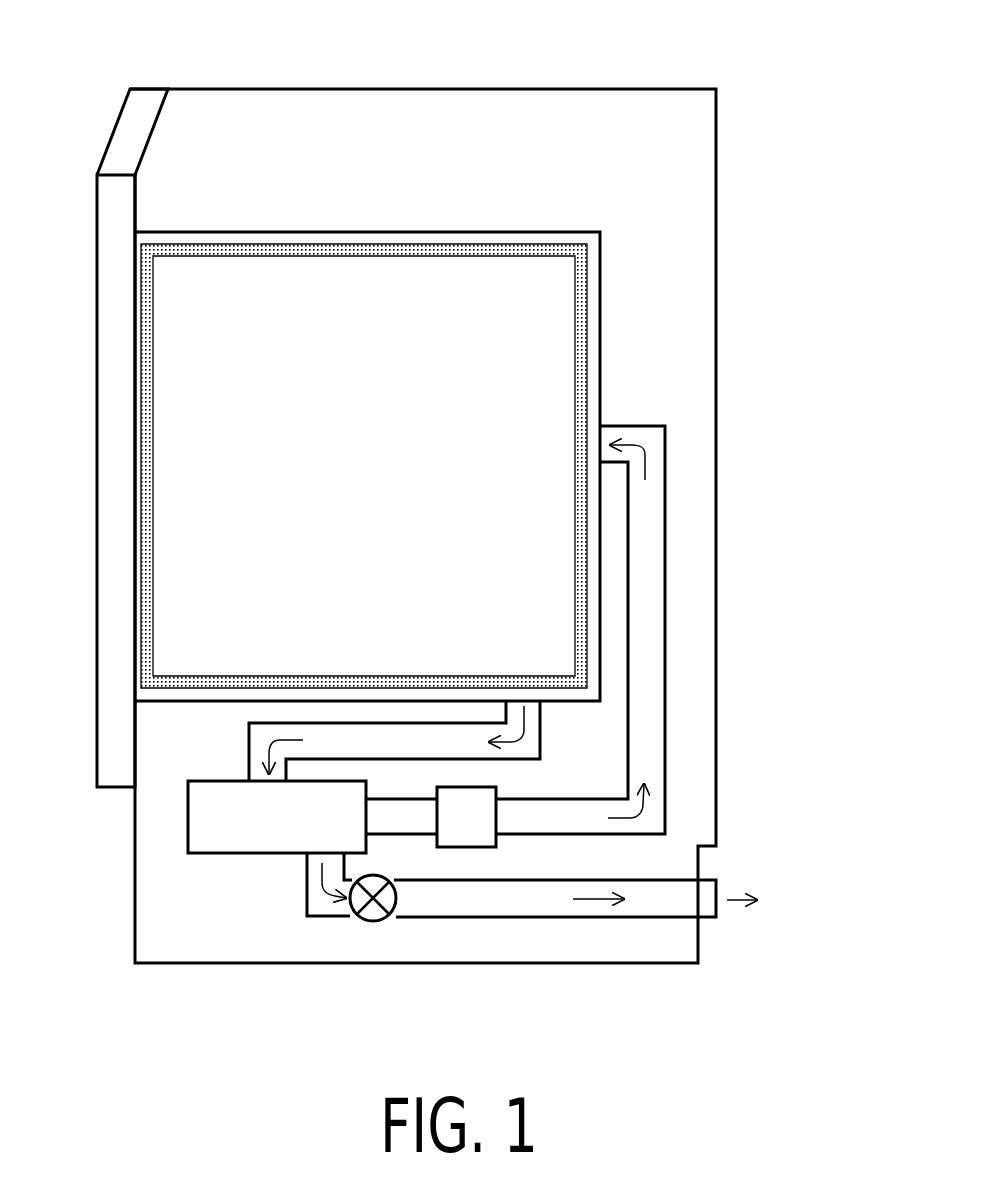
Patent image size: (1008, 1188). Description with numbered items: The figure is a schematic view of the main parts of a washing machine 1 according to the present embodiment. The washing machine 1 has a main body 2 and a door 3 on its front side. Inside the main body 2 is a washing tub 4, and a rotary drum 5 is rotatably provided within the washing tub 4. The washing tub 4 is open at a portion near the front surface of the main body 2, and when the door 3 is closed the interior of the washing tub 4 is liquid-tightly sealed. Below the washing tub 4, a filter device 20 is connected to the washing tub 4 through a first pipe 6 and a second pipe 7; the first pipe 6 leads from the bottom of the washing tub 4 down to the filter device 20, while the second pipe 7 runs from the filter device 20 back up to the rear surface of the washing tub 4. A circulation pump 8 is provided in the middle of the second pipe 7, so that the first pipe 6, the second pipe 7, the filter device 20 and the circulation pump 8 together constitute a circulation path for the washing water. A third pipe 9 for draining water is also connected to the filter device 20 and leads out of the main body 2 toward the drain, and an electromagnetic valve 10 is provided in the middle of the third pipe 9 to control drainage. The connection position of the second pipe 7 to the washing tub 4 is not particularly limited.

The washing machine 1 is at (668, 67).
The main body 2 is at (466, 98).
The door 3 is at (102, 467).
The washing tub 4 is at (228, 232).
The rotary drum 5 is at (357, 246).
The first pipe 6 is at (258, 747).
The second pipe 7 is at (657, 587).
The circulation pump 8 is at (470, 850).
The third pipe 9 is at (543, 905).
The electromagnetic valve 10 is at (373, 921).
The filter device 20 is at (222, 853).